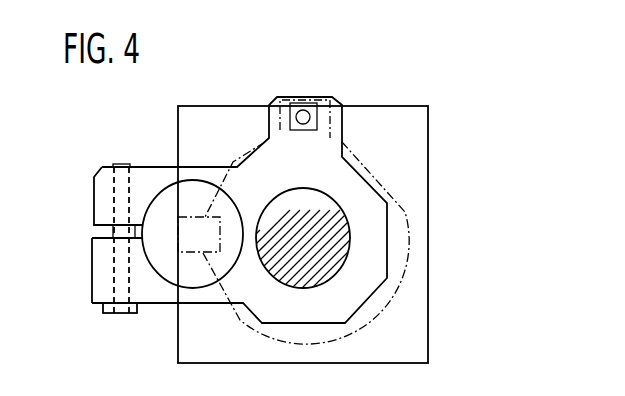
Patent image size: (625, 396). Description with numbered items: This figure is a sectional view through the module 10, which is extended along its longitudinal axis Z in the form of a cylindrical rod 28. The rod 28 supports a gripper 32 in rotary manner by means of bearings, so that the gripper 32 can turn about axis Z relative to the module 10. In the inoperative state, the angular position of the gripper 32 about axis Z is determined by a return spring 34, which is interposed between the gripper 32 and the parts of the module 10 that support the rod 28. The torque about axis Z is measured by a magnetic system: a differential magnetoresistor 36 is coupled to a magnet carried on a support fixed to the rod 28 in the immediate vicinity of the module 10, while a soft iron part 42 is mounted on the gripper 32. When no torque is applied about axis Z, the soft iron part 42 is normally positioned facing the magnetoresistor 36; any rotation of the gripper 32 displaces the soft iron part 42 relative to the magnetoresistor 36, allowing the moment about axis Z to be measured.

The module 10 is at (430, 118).
The cylindrical rod 28 is at (350, 218).
The gripper 32 is at (398, 275).
The return spring 34 is at (302, 110).
The differential magnetoresistor 36 is at (172, 188).
The soft iron part 42 is at (192, 252).